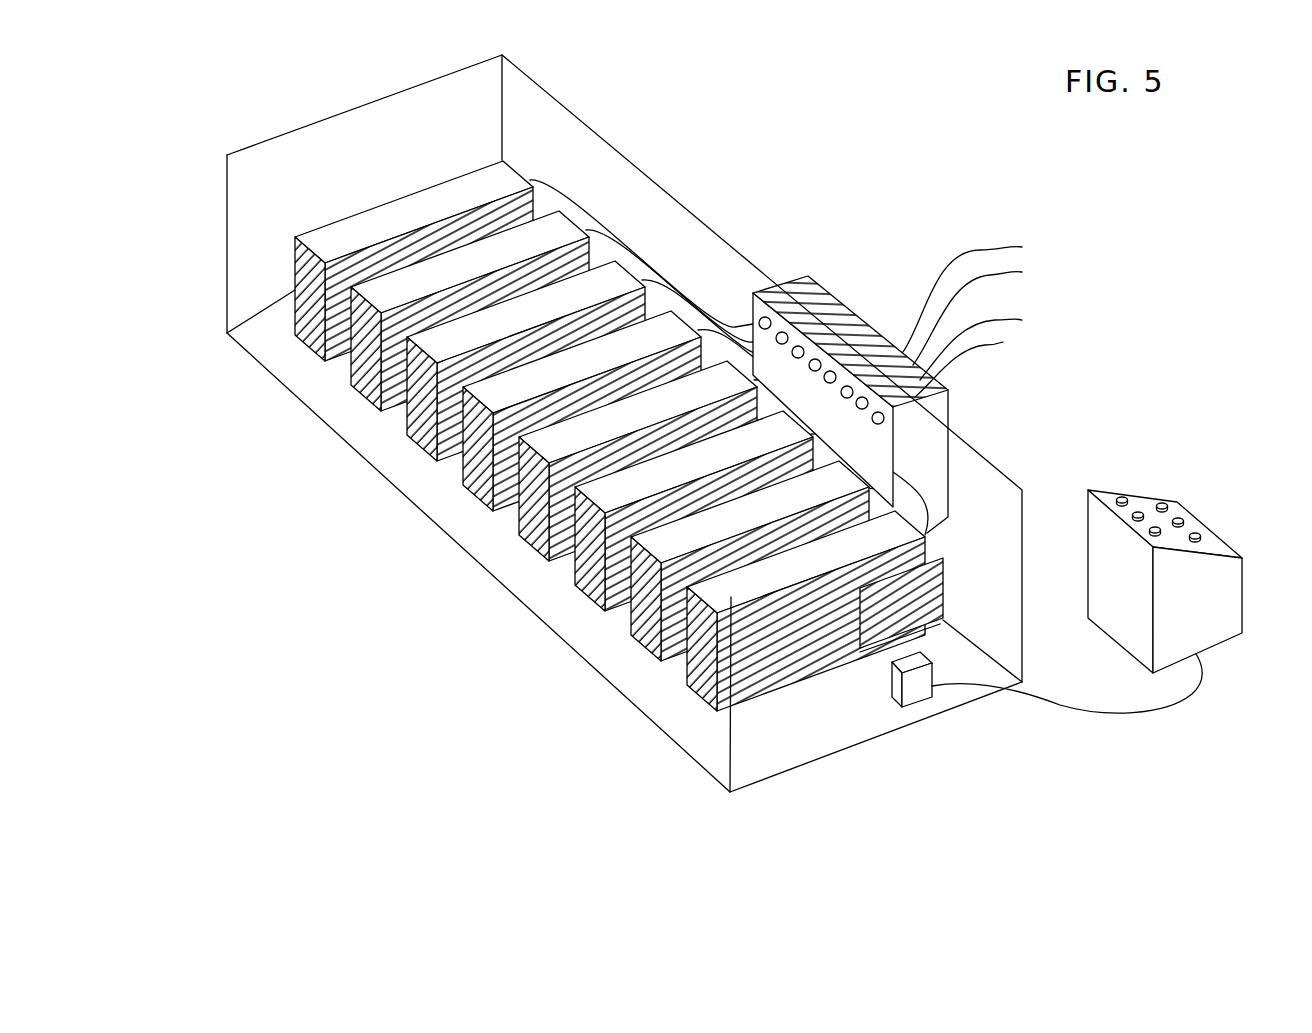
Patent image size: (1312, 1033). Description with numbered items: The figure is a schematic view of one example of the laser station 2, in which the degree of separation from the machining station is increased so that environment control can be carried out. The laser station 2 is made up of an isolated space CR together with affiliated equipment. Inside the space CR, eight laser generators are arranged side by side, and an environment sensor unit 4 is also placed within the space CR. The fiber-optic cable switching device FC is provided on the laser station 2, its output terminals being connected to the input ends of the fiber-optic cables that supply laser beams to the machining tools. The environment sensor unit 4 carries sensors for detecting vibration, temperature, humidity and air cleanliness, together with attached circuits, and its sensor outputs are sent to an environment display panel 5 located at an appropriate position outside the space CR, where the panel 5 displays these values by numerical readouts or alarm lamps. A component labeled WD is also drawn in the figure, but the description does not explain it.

The laser station 2 is at (590, 482).
The isolated space CR is at (580, 118).
The fiber-optic cable switching device FC is at (950, 403).
The wavelength detector WD is at (975, 568).
The environment sensor unit 4 is at (913, 706).
The environment display panel 5 is at (1243, 598).